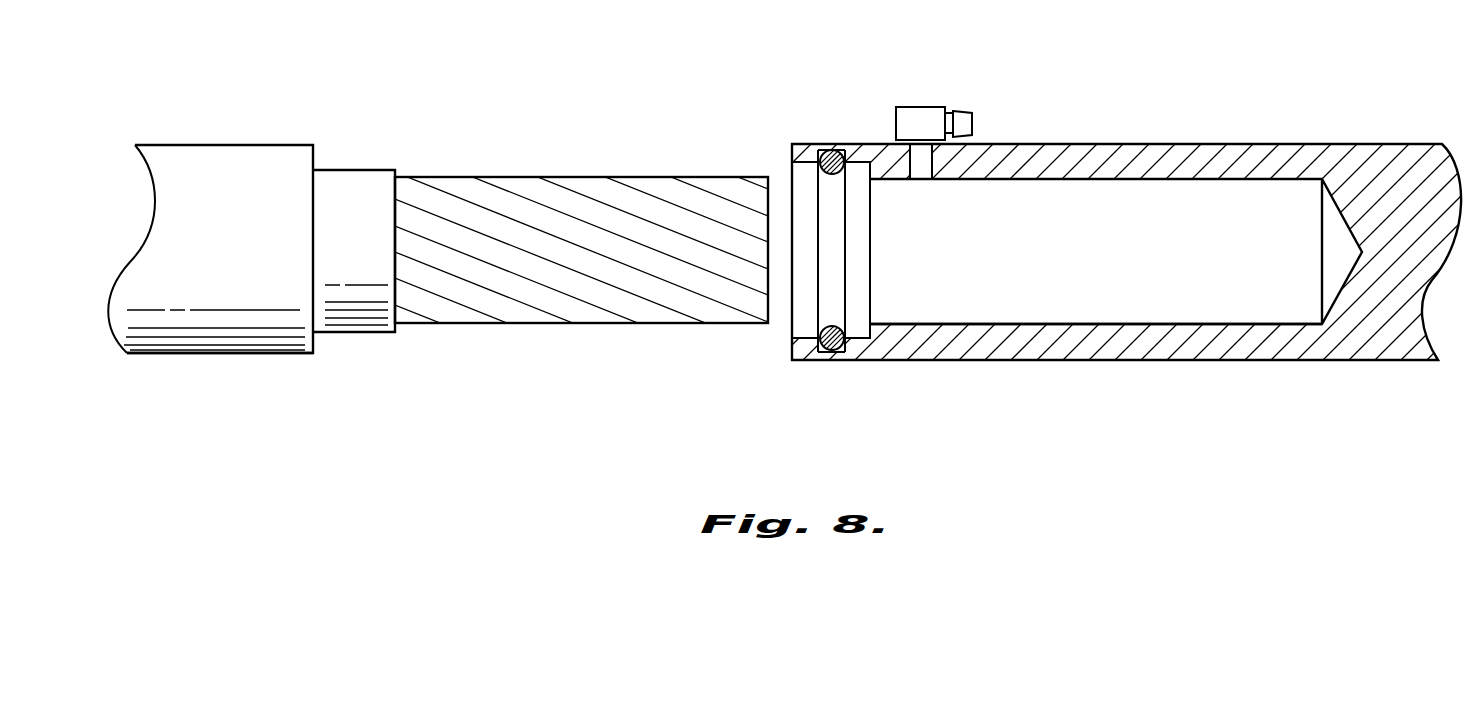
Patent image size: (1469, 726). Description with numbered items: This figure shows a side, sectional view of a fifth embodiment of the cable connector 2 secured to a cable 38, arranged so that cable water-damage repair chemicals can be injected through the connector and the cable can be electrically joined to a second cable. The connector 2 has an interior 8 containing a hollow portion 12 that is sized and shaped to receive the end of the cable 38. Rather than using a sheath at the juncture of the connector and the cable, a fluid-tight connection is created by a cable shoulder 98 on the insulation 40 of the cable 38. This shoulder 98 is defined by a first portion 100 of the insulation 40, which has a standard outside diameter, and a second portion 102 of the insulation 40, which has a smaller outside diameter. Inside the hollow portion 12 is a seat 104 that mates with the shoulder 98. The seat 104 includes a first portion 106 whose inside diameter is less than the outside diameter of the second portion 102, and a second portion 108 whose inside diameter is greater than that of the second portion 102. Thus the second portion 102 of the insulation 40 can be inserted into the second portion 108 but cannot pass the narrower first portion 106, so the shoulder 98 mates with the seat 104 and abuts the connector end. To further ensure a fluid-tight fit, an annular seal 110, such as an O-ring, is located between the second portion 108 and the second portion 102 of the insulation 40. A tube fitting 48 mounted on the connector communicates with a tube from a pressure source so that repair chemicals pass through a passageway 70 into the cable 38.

The cable connector 2 is at (1019, 231).
The interior 8 is at (1375, 337).
The hollow portion 12 is at (1237, 314).
The cable 38 is at (225, 355).
The insulation 40 is at (253, 155).
The tube fitting 48 is at (919, 112).
The passageway 70 is at (934, 157).
The cable shoulder 98 is at (322, 336).
The first portion of insulation 100 is at (297, 345).
The second portion of insulation 102 is at (378, 334).
The seat 104 is at (872, 338).
The first portion of seat 106 is at (1032, 327).
The second portion of seat 108 is at (793, 340).
The annular seal 110 is at (845, 141).